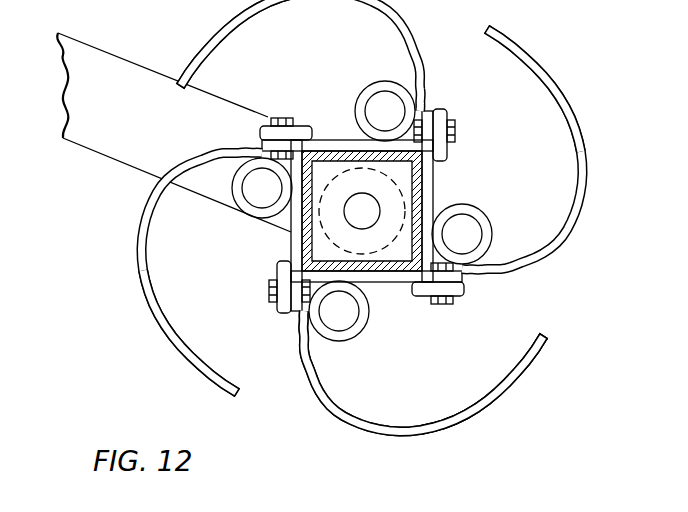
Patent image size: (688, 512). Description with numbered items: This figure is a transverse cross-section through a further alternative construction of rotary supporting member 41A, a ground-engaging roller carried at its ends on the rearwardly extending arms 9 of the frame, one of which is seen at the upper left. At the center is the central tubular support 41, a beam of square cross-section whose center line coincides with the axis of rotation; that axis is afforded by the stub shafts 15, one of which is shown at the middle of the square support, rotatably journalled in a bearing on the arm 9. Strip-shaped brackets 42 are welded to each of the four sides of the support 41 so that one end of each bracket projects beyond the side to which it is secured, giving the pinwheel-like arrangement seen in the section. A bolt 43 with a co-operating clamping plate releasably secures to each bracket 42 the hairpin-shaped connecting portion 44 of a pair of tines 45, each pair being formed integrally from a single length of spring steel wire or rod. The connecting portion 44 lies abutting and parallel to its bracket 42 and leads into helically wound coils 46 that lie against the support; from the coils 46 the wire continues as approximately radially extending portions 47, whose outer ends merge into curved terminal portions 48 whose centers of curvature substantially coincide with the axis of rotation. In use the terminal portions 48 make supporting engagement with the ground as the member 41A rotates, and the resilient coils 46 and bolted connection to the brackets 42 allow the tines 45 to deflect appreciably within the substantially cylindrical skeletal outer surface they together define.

The arm 9 is at (93, 55).
The stub shaft 15 is at (370, 188).
The central tubular support 41 is at (305, 226).
The rotary supporting member 41A is at (258, 312).
The strip-shaped bracket 42 is at (312, 147).
The bolt 43 is at (279, 115).
The hairpin-shaped connecting portion 44 is at (331, 138).
The tine 45 is at (366, 441).
The helically wound coil 46 is at (242, 203).
The radially extending portion 47 is at (158, 186).
The curved terminal portion 48 is at (143, 293).